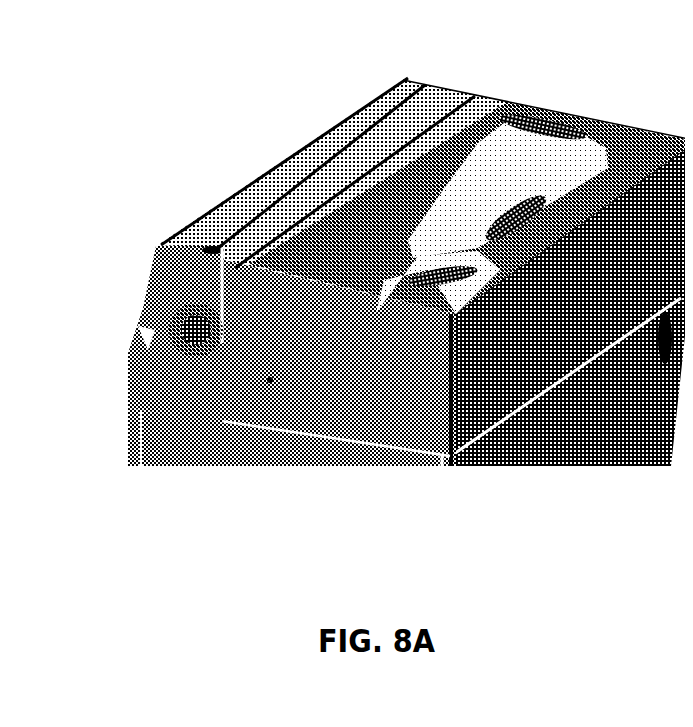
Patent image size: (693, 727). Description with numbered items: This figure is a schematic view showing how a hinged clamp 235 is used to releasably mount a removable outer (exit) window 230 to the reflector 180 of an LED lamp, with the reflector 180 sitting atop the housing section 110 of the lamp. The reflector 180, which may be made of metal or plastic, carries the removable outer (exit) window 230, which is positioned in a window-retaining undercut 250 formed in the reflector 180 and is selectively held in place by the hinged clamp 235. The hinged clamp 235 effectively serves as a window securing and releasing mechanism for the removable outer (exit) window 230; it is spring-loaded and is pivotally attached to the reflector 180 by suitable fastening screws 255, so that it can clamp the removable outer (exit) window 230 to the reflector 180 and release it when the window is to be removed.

The housing section 110 is at (165, 443).
The reflector 180 is at (262, 372).
The removable outer (exit) window 230 is at (375, 288).
The hinged clamp 235 is at (128, 253).
The window-retaining undercut 250 is at (428, 300).
The fastening screws 255 is at (188, 325).